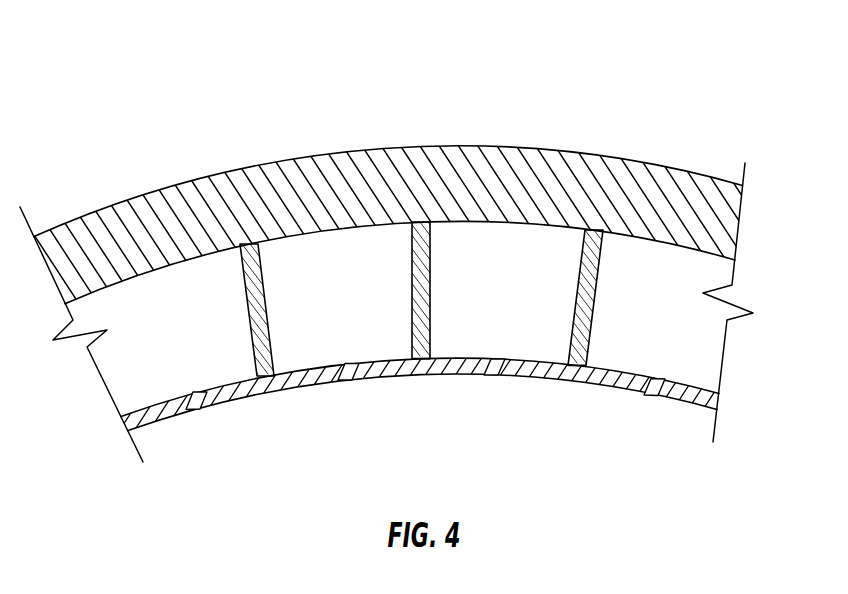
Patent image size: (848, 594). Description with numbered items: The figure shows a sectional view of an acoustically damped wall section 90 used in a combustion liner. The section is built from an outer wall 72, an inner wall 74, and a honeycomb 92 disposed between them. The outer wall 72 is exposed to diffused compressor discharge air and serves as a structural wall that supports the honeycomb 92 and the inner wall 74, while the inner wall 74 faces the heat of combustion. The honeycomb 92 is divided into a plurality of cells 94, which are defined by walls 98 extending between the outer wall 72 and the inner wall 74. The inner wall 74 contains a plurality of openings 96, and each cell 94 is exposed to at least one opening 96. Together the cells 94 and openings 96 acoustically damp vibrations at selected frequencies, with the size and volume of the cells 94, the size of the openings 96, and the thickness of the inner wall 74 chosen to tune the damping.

The acoustically damped wall section 90 is at (116, 71).
The outer wall 72 is at (690, 187).
The inner wall 74 is at (708, 400).
The honeycomb 92 is at (86, 402).
The cells 94 is at (170, 339).
The openings 96 is at (207, 395).
The walls 98 is at (276, 352).